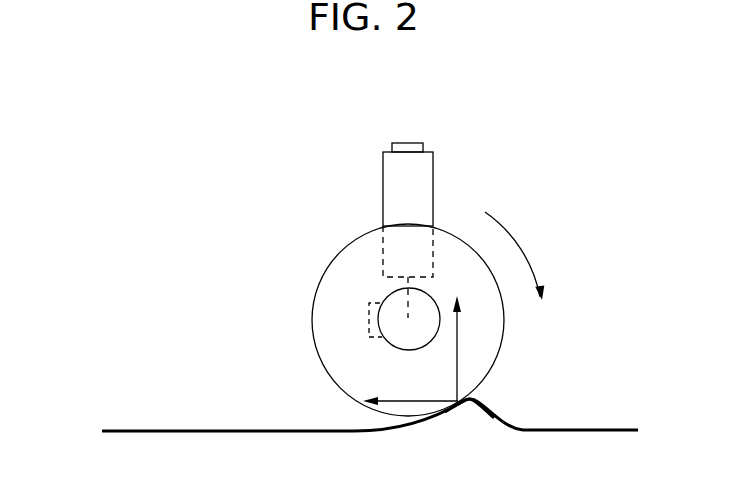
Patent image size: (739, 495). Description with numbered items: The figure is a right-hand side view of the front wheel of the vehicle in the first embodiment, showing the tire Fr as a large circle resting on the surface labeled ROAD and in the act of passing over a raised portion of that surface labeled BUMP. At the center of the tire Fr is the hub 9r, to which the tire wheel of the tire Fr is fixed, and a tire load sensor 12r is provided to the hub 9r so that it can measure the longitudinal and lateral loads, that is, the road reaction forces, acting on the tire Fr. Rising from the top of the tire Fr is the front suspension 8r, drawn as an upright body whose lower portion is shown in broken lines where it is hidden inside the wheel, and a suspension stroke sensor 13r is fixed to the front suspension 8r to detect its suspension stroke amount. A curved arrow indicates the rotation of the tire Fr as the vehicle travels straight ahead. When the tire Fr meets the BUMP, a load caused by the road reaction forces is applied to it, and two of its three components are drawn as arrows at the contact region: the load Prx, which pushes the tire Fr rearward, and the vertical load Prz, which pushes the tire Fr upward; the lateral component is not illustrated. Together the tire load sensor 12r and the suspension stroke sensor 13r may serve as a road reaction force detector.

The tire Fr is at (311, 323).
The hub 9r is at (385, 341).
The front suspension 8r is at (383, 189).
The suspension stroke sensor 13r is at (403, 143).
The tire load sensor 12r is at (368, 319).
The vertical load Prz is at (499, 348).
The load that pushes the tire rearward Prx is at (354, 409).
The road surface ROAD is at (157, 431).
The road bump BUMP is at (493, 407).